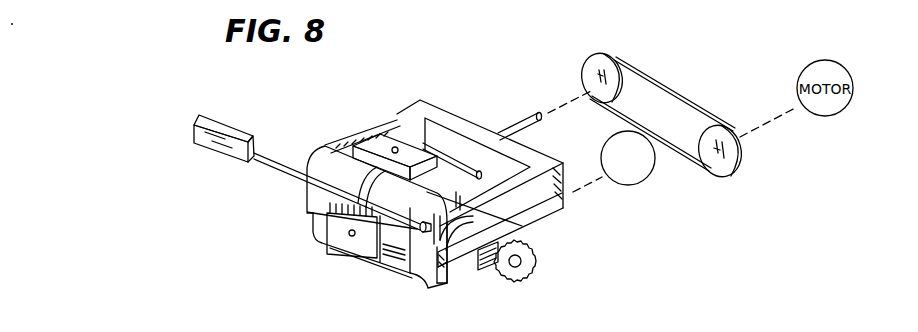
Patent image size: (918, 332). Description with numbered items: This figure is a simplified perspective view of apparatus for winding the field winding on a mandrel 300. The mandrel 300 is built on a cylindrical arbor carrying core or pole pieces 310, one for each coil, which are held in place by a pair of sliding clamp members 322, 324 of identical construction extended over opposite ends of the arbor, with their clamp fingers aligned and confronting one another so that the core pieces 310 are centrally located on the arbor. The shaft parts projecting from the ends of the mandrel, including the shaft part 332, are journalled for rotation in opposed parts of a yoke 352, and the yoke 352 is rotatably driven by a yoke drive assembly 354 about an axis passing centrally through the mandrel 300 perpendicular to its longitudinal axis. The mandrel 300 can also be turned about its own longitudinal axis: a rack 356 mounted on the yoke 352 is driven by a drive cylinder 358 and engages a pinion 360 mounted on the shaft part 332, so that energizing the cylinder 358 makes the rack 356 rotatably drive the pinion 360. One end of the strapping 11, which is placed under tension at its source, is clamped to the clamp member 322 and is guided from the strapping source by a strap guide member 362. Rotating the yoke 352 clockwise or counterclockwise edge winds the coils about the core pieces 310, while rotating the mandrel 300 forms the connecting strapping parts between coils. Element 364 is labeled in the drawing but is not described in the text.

The strapping 11 is at (288, 162).
The mandrel 300 is at (433, 195).
The core pieces 310 is at (371, 136).
The clamp member 322 is at (428, 281).
The clamp member 324 is at (331, 141).
The shaft part 332 is at (466, 272).
The yoke 352 is at (468, 123).
The yoke drive assembly 354 is at (683, 84).
The rack 356 is at (546, 220).
The drive cylinder 358 is at (647, 177).
The pinion 360 is at (537, 268).
The strap guide member 362 is at (235, 128).
The element 364 is at (208, 323).